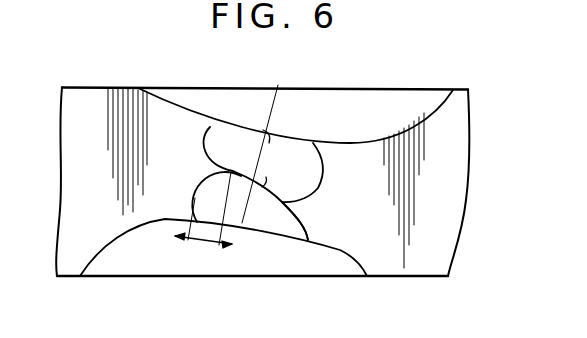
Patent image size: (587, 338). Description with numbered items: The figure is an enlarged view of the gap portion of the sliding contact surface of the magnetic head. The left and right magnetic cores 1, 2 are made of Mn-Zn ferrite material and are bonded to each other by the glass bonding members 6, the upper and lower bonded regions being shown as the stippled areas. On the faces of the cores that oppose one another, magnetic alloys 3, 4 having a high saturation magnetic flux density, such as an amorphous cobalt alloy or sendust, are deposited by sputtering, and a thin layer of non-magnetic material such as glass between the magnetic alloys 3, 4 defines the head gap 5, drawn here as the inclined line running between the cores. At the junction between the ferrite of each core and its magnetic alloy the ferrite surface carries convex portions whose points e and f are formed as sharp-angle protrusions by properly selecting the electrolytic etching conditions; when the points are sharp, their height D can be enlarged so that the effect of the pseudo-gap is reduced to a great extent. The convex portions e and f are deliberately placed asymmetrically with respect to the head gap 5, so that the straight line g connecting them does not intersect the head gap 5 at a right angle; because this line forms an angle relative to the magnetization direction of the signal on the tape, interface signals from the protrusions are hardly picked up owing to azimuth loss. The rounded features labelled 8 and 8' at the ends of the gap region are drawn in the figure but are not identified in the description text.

The magnetic core 1 is at (70, 163).
The magnetic core 2 is at (455, 162).
The magnetic alloy 3 is at (239, 222).
The magnetic alloy 4 is at (275, 222).
The head gap 5 is at (265, 140).
The bonding member 6 is at (408, 100).
The projection 8 is at (195, 208).
The projection 8' is at (320, 221).
The convex portion e is at (256, 183).
The convex portion f is at (302, 172).
The straight line g is at (270, 169).
The height D is at (203, 250).